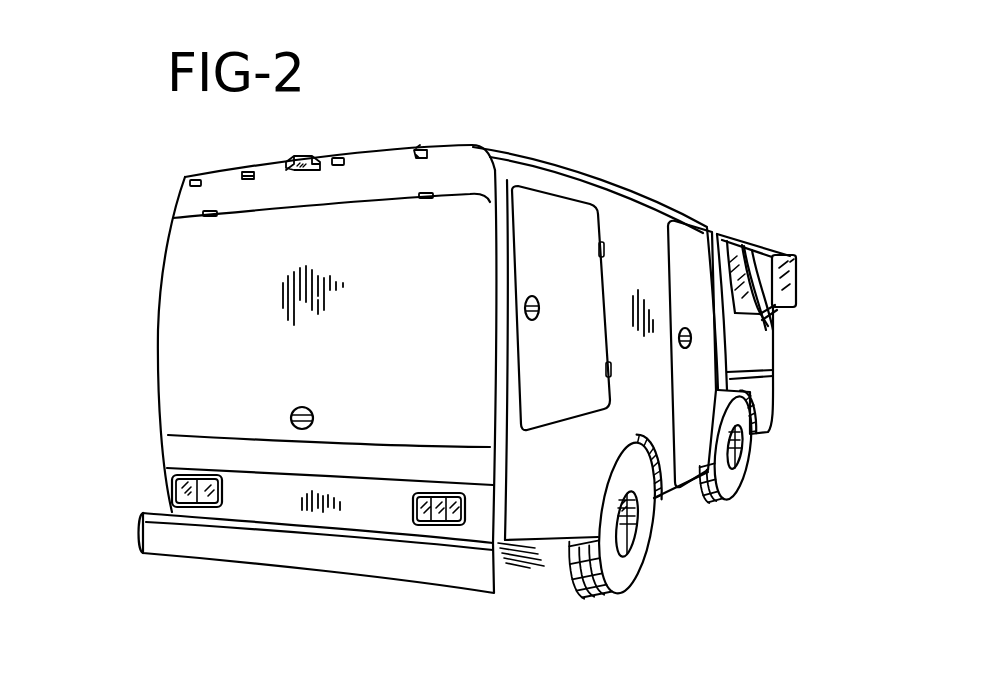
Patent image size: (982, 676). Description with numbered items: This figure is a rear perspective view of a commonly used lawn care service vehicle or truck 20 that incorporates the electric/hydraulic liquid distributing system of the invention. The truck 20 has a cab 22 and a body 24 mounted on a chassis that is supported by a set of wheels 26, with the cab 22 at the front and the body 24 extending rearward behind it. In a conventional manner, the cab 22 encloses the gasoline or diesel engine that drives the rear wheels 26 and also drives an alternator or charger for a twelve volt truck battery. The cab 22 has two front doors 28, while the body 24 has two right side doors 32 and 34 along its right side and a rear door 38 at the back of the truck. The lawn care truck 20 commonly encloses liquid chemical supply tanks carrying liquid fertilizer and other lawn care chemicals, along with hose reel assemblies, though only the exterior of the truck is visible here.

The lawn care service vehicle or truck 20 is at (478, 112).
The cab 22 is at (740, 230).
The body 24 is at (620, 182).
The wheels 26 is at (718, 498).
The front doors 28 is at (760, 353).
The right side door 32 is at (687, 234).
The right side door 34 is at (543, 200).
The rear door 38 is at (184, 270).